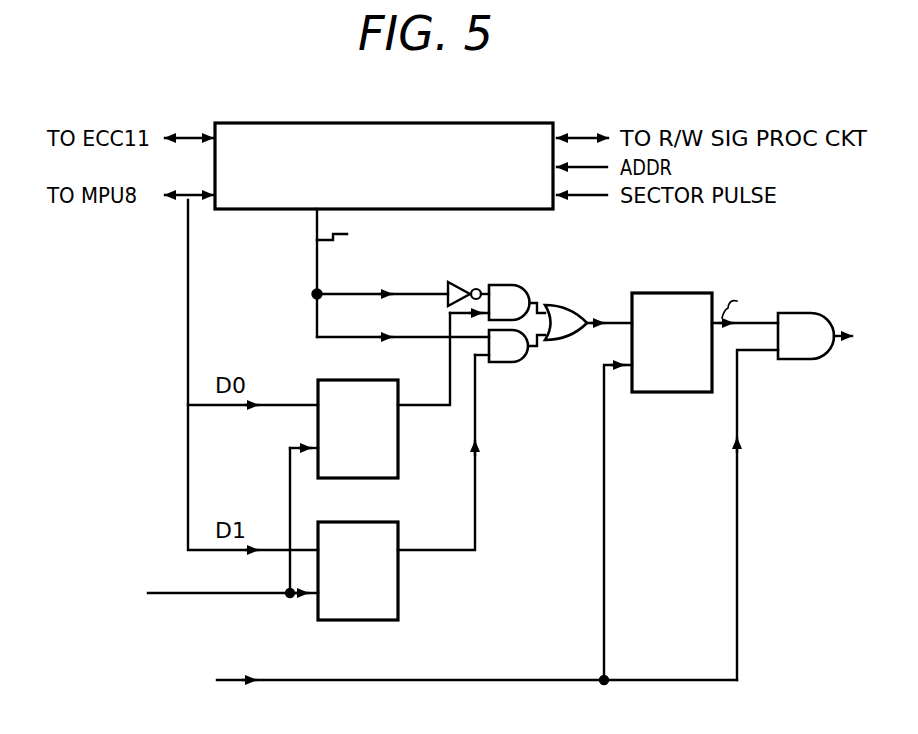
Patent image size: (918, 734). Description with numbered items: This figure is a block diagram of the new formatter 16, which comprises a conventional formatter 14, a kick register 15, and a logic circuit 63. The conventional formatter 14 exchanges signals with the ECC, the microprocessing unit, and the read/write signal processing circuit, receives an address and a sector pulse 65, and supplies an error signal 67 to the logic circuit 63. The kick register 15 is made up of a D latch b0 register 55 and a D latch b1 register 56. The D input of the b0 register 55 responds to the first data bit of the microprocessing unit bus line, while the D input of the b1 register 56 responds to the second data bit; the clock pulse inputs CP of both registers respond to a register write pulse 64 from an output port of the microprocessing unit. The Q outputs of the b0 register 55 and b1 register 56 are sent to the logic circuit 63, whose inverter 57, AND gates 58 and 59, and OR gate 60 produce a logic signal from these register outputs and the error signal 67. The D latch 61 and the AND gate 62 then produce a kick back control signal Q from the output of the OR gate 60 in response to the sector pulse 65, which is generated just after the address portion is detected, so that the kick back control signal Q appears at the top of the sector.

The conventional formatter 14 is at (527, 123).
The kick register 15 is at (404, 509).
The new formatter 16 is at (665, 116).
The b0 register 55 is at (398, 468).
The b1 register 56 is at (398, 608).
The inverter 57 is at (462, 284).
The AND gate 58 is at (526, 285).
The AND gate 59 is at (513, 364).
The OR gate 60 is at (556, 305).
The D latch 61 is at (684, 293).
The AND gate 62 is at (800, 313).
The logic circuit 63 is at (763, 369).
The register write pulse 64 is at (196, 596).
The sector pulse 65 is at (293, 684).
The error signal 67 is at (430, 238).